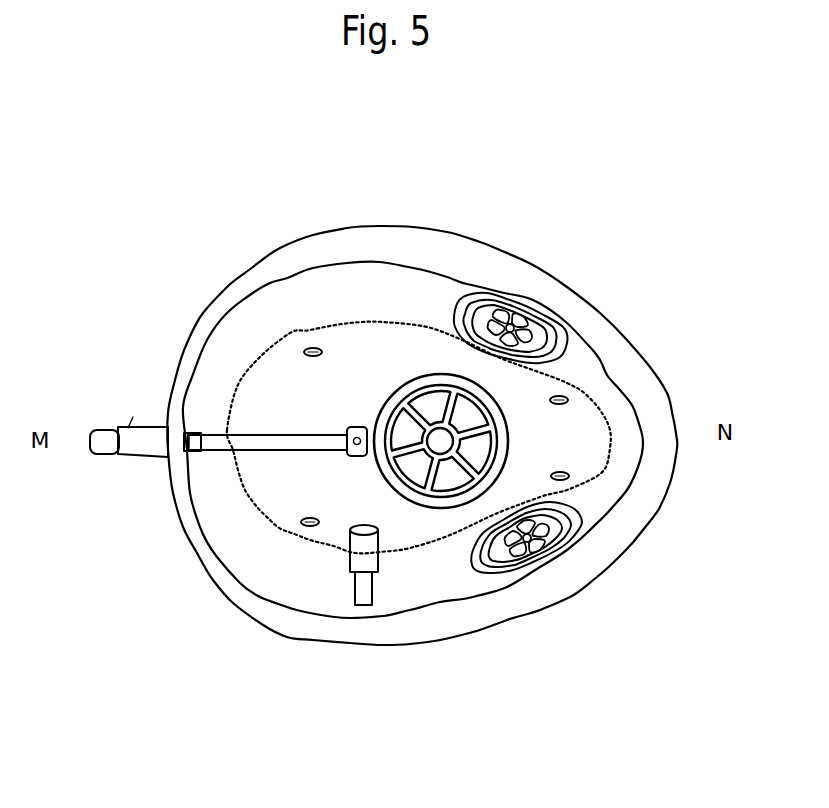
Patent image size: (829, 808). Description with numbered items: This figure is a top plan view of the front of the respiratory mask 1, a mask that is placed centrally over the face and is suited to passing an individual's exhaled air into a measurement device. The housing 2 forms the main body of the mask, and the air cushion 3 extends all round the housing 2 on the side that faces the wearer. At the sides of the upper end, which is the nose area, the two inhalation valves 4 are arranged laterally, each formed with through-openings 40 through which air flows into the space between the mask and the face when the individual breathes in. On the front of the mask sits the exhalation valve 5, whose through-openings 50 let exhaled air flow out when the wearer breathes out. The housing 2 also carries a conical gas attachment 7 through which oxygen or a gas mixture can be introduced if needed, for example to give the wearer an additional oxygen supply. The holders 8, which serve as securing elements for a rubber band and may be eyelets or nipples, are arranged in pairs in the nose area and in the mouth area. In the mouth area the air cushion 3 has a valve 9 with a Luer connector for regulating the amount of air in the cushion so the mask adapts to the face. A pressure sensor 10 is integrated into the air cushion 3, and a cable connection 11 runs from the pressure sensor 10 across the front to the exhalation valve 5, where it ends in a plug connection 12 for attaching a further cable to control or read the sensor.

The respiratory mask 1 is at (187, 272).
The housing 2 is at (435, 587).
The air cushion 3 is at (515, 280).
The inhalation valve 4 is at (568, 350).
The through-openings 40 is at (550, 322).
The exhalation valve 5 is at (425, 379).
The through-openings 50 is at (413, 467).
The conical gas attachment 7 is at (363, 588).
The holders 8 is at (312, 347).
The valve 9 is at (142, 450).
The pressure sensor 10 is at (193, 443).
The cable connection 11 is at (272, 450).
The plug connection 12 is at (351, 437).